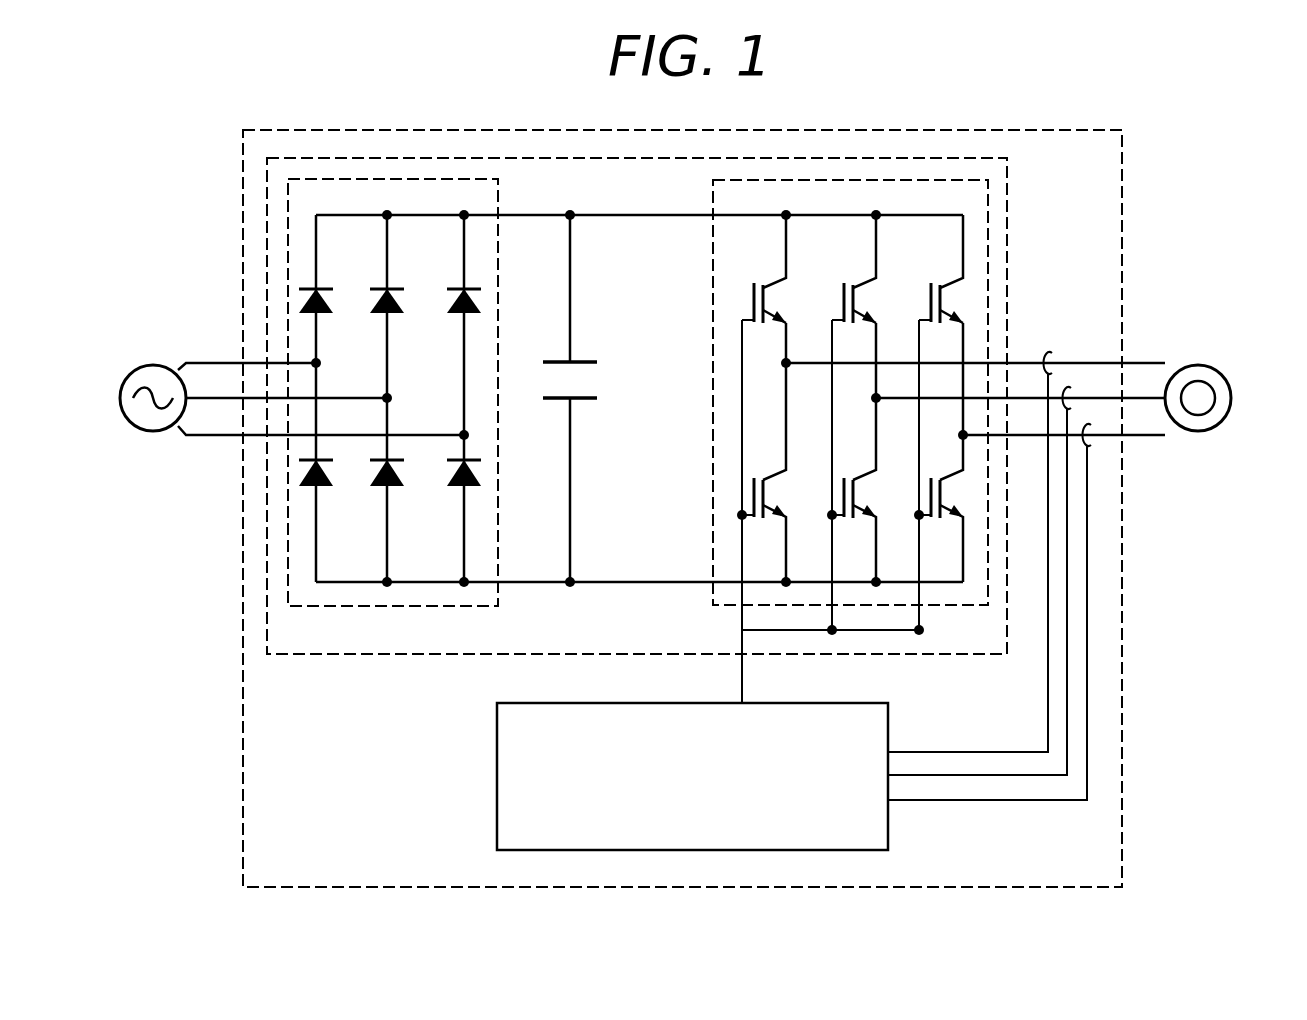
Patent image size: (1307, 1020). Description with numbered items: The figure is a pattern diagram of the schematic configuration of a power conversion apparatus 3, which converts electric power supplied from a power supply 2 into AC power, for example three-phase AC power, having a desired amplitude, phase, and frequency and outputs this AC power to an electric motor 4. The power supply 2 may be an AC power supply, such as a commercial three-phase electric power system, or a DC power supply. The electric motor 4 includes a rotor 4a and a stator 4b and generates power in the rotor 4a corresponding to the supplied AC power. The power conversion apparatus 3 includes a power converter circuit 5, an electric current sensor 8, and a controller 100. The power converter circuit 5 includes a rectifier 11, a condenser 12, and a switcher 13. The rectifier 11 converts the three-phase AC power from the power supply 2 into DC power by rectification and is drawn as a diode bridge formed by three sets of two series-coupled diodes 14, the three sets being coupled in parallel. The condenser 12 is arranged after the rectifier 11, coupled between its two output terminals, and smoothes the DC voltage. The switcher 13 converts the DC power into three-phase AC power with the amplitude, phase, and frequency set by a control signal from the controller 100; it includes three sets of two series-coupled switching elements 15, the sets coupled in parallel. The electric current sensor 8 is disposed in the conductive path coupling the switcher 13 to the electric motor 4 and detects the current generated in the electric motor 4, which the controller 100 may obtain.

The power supply 2 is at (153, 365).
The power conversion apparatus 3 is at (1063, 128).
The electric motor 4 is at (1225, 347).
The rotor 4a is at (1216, 398).
The stator 4b is at (1228, 378).
The power converter circuit 5 is at (1007, 203).
The electric current sensor 8 is at (1086, 424).
The rectifier 11 is at (498, 250).
The condenser 12 is at (572, 362).
The switcher 13 is at (713, 255).
The diodes 14 is at (372, 301).
The switching elements 15 is at (748, 303).
The controller 100 is at (497, 780).